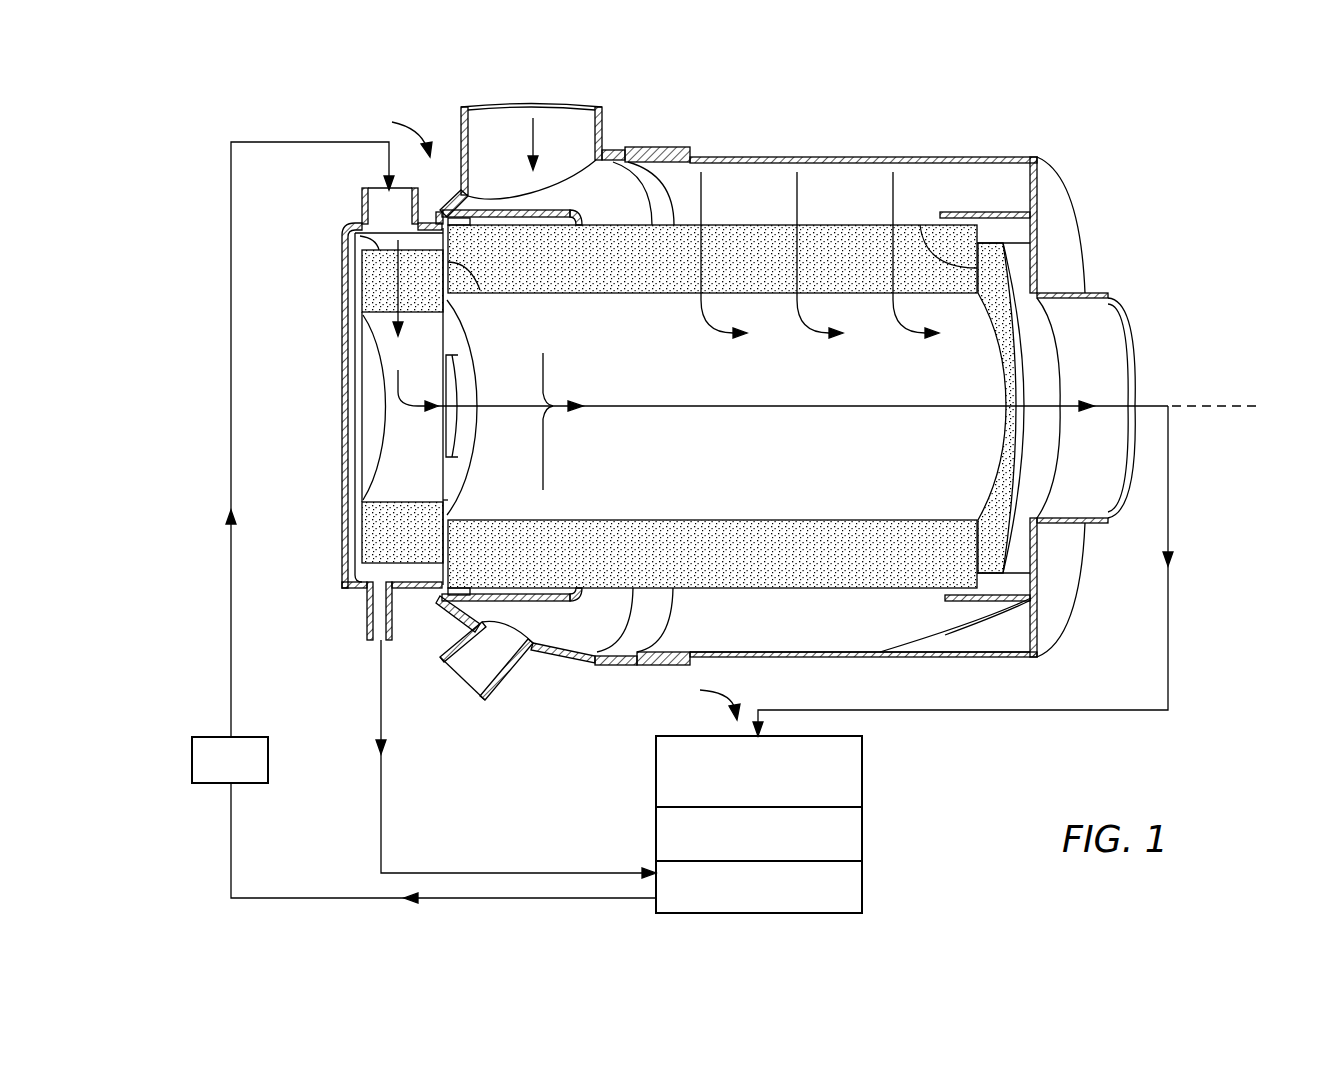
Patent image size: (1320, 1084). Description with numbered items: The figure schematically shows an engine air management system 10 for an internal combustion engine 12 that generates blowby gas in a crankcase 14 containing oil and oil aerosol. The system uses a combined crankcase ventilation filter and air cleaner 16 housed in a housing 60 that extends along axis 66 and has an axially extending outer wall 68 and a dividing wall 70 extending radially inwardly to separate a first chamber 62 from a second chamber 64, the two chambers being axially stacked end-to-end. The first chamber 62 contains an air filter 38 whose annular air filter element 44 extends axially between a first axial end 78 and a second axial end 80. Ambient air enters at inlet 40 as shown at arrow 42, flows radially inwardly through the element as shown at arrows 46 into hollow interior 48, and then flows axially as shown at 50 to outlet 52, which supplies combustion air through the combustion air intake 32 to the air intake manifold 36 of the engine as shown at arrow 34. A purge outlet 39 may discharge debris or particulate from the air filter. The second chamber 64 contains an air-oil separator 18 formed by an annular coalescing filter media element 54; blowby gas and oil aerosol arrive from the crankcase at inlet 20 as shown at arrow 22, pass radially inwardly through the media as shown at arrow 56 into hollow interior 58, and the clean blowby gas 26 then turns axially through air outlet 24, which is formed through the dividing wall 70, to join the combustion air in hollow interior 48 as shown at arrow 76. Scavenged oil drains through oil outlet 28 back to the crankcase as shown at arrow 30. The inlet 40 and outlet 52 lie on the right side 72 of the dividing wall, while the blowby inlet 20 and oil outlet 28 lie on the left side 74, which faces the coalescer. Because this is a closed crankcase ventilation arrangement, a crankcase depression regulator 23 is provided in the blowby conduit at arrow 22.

The engine air management system 10 is at (852, 698).
The internal combustion engine 12 is at (862, 833).
The crankcase 14 is at (862, 889).
The combined crankcase ventilation filter and air cleaner 16 is at (393, 131).
The air-oil separator 18 is at (345, 256).
The inlet 20 is at (375, 186).
The arrow (blowby gas and oil aerosol flow) 22 is at (300, 142).
The crankcase depression regulator 23 is at (270, 764).
The air outlet 24 is at (445, 435).
The arrow (clean blowby gas flow) 26 is at (393, 378).
The oil outlet 28 is at (367, 642).
The arrow (scavenged oil flow) 30 is at (378, 700).
The combustion air intake 32 is at (702, 695).
The arrow (combustion air to engine) 34 is at (930, 709).
The air intake manifold 36 is at (862, 777).
The air filter 38 is at (838, 160).
The purge outlet 39 is at (465, 678).
The inlet 40 is at (598, 150).
The arrow (incoming ambient air) 42 is at (528, 148).
The annular air filter element 44 is at (665, 282).
The arrows (radially inward air flow) 46 is at (703, 192).
The hollow interior 48 is at (710, 377).
The arrow (axial flow) 50 is at (802, 405).
The outlet 52 is at (1132, 332).
The annular coalescing filter media element 54 is at (375, 280).
The arrow (blowby flow through coalescer) 56 is at (380, 300).
The hollow interior 58 is at (408, 368).
The housing 60 is at (430, 212).
The first chamber 62 is at (757, 660).
The second chamber 64 is at (412, 592).
The axis 66 is at (1212, 404).
The outer wall 68 is at (424, 215).
The dividing wall 70 is at (443, 487).
The right side 72 is at (470, 455).
The left side 74 is at (440, 500).
The arrow (blowby joining combustion air) 76 is at (566, 412).
The first axial end 78 is at (935, 262).
The second axial end 80 is at (480, 290).